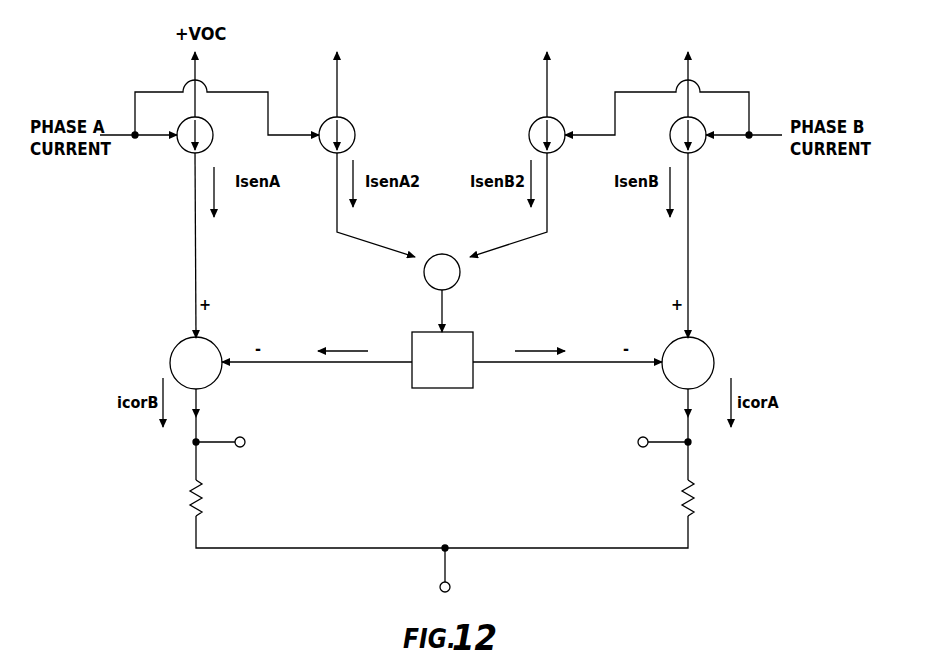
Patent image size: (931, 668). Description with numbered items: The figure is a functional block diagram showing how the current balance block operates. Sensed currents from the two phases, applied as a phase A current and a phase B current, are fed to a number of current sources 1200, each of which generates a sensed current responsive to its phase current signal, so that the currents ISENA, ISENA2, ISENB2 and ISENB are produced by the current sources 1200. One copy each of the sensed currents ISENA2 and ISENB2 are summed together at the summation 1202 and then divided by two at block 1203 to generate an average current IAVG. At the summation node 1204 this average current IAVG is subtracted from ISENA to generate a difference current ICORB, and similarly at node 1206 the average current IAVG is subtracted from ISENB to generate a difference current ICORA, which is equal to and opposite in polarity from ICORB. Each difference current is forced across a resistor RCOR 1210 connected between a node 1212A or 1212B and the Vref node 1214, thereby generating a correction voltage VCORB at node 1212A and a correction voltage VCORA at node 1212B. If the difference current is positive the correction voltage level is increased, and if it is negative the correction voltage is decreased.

The current sources 1200 is at (182, 148).
The summation 1202 is at (460, 270).
The divide-by-two block 1203 is at (450, 388).
The summation node 1204 is at (172, 375).
The node 1206 is at (713, 375).
The resistor RCOR 1210 is at (186, 500).
The node 1212A is at (200, 445).
The node 1212B is at (695, 445).
The Vref node 1214 is at (447, 546).